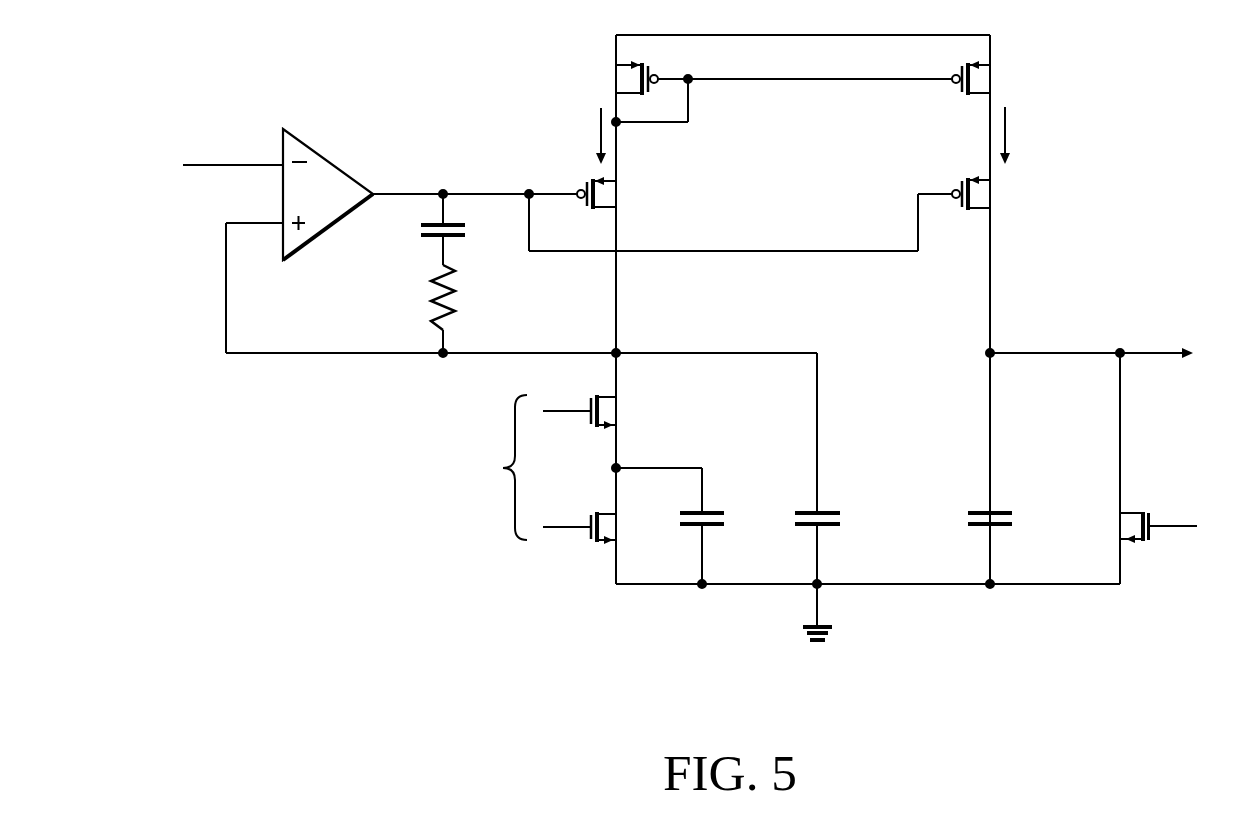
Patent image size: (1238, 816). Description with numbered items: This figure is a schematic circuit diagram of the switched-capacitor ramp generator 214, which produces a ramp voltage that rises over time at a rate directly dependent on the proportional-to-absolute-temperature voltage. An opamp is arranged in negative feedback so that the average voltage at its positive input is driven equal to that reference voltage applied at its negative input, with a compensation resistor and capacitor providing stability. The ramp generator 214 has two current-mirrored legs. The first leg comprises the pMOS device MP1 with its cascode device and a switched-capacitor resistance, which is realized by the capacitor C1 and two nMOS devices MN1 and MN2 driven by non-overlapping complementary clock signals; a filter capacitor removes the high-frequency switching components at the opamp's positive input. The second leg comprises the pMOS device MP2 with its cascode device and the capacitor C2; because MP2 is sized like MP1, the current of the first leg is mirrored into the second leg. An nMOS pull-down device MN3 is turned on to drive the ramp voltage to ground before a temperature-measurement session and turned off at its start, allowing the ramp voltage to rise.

The switched-capacitor ramp generator 214 is at (706, 383).
The pMOS transistor device MP1 is at (616, 78).
The pMOS transistor device MP2 is at (992, 78).
The nMOS transistor device MN1 is at (601, 412).
The nMOS transistor device MN2 is at (601, 528).
The nMOS pull-down transistor device MN3 is at (1136, 527).
The capacitor C1 is at (719, 526).
The capacitor C2 is at (1006, 468).